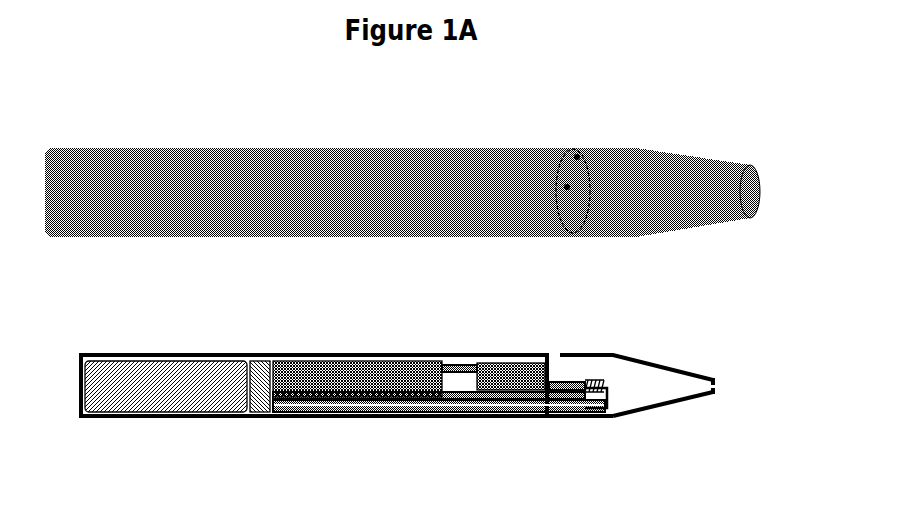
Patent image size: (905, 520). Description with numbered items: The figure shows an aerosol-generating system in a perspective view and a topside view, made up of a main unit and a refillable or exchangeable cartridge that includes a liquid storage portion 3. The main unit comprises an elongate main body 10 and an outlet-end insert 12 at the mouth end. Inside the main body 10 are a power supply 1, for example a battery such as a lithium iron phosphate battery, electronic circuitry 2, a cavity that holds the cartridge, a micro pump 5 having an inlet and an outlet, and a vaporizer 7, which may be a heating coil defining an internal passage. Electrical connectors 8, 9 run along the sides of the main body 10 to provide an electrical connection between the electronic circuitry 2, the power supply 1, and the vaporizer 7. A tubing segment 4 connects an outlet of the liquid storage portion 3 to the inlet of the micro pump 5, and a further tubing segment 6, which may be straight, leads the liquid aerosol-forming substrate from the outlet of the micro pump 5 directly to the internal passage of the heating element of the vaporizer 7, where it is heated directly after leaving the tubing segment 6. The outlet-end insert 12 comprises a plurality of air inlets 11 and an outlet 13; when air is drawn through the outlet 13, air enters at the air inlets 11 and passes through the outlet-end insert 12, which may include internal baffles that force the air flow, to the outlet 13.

The power supply 1 is at (113, 365).
The electronic circuitry 2 is at (260, 367).
The liquid storage portion 3 is at (333, 355).
The tubing segment 4 is at (458, 368).
The micro pump 5 is at (497, 377).
The tubing segment 6 is at (565, 382).
The vaporizer 7 is at (606, 378).
The electrical connector 8 is at (537, 408).
The electrical connector 9 is at (475, 394).
The main body 10 is at (553, 147).
The air inlets 11 is at (567, 187).
The outlet-end insert 12 is at (637, 148).
The outlet 13 is at (715, 382).